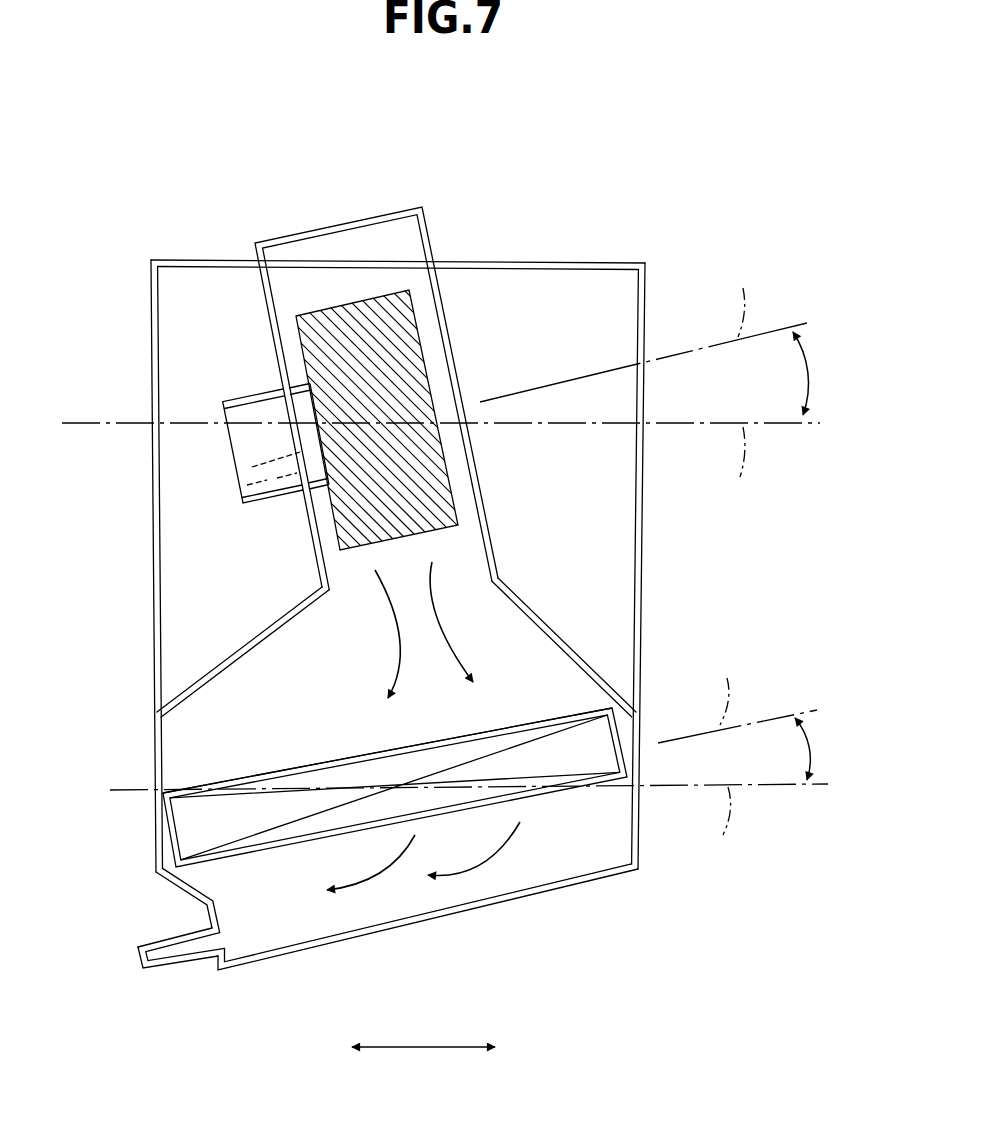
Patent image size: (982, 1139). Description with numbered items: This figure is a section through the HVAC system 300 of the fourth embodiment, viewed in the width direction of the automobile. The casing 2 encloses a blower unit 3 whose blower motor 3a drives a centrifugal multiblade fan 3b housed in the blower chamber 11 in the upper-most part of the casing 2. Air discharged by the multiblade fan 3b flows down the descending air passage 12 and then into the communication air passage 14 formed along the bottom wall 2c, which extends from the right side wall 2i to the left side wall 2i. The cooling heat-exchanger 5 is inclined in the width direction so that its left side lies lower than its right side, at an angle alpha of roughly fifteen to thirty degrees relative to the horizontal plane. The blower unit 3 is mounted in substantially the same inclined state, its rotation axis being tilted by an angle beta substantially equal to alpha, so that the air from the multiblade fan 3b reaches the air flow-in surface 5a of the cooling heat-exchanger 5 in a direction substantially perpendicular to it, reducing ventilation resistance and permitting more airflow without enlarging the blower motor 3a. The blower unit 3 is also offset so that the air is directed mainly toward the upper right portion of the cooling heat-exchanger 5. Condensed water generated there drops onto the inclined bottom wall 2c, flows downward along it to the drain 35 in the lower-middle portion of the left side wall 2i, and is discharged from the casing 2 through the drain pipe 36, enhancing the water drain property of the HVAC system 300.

The HVAC system 300 is at (460, 207).
The casing 2 is at (500, 260).
The side wall 2i is at (152, 530).
The bottom wall 2c is at (483, 908).
The blower chamber 11 is at (338, 242).
The descending air passage 12 is at (273, 678).
The blower unit 3 is at (230, 440).
The blower motor 3a is at (267, 485).
The centrifugal multiblade fan 3b is at (424, 346).
The cooling heat-exchanger 5 is at (323, 780).
The air flow-in surface 5a is at (537, 722).
The communication air passage 14 is at (247, 890).
The drain 35 is at (212, 940).
The drain pipe 36 is at (187, 963).